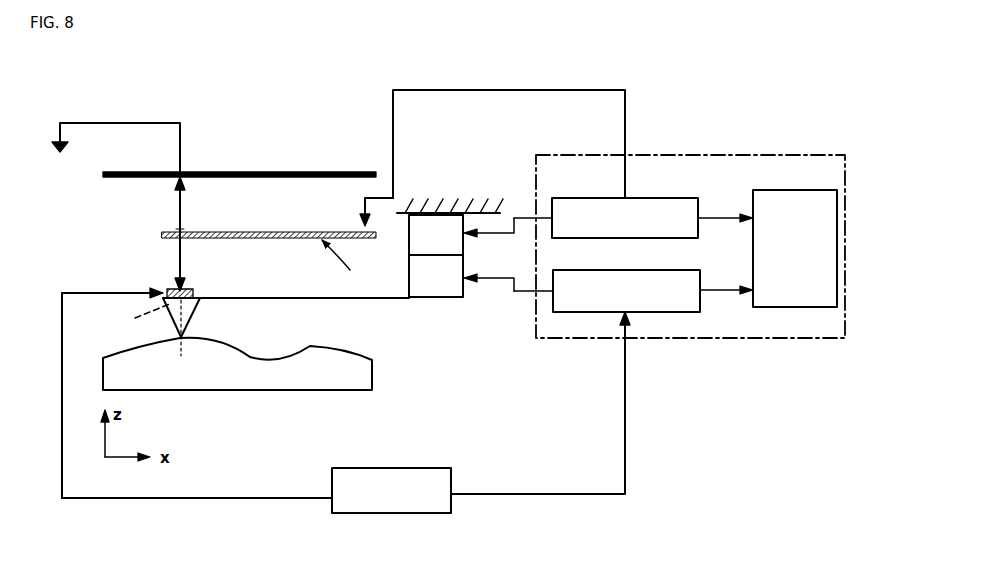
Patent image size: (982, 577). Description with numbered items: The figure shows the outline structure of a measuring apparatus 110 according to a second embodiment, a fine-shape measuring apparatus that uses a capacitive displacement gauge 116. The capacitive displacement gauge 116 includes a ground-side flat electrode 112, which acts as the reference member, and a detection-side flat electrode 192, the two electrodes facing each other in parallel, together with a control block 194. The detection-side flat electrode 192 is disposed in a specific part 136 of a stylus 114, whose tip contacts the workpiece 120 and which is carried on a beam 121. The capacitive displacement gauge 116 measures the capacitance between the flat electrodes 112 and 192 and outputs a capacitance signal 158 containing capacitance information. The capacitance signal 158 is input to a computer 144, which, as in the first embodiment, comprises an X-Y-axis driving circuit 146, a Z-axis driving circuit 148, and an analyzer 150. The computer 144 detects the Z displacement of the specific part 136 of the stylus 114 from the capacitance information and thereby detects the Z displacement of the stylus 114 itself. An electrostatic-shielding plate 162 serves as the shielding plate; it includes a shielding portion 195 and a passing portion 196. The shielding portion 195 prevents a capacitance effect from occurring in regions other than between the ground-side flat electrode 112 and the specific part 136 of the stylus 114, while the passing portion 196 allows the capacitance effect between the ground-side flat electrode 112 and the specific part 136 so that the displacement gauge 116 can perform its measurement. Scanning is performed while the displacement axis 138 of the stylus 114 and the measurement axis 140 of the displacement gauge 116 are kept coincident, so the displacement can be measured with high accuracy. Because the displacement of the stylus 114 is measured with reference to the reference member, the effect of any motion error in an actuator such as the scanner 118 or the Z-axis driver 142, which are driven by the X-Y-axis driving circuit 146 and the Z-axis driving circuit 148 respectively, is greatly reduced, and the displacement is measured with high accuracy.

The measuring apparatus 110 is at (742, 100).
The ground-side flat electrode 112 is at (270, 172).
The stylus 114 is at (194, 312).
The capacitive displacement gauge 116 is at (106, 223).
The scanner 118 is at (426, 270).
The sample 120 is at (274, 346).
The cantilever beam 121 is at (287, 298).
The specific part of the stylus 136 is at (186, 289).
The displacement axis 138 is at (132, 316).
The measurement axis 140 is at (181, 220).
The Z-axis driver 142 is at (452, 290).
The computer 144 is at (785, 155).
The X-Y-axis driving circuit 146 is at (646, 198).
The Z-axis driving circuit 148 is at (646, 270).
The analyzer 150 is at (772, 190).
The capacitance signal 158 is at (520, 494).
The electrostatic-shielding plate 162 is at (353, 263).
The detection-side flat electrode 192 is at (158, 288).
The control block 194 is at (402, 468).
The shielding portion 195 is at (264, 232).
The passing portion 196 is at (180, 230).